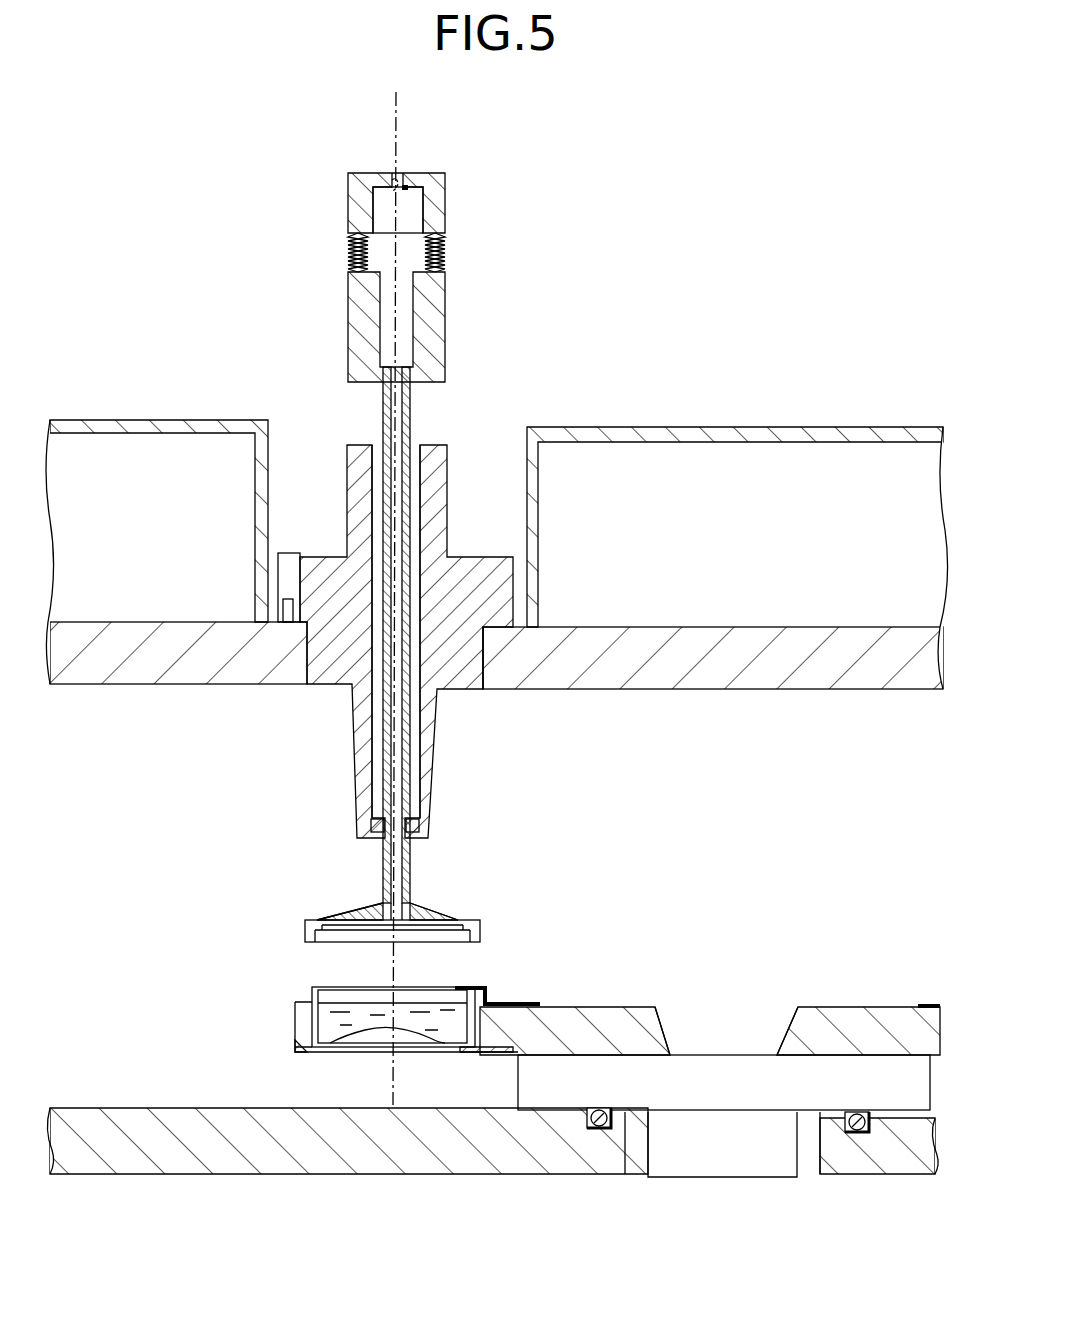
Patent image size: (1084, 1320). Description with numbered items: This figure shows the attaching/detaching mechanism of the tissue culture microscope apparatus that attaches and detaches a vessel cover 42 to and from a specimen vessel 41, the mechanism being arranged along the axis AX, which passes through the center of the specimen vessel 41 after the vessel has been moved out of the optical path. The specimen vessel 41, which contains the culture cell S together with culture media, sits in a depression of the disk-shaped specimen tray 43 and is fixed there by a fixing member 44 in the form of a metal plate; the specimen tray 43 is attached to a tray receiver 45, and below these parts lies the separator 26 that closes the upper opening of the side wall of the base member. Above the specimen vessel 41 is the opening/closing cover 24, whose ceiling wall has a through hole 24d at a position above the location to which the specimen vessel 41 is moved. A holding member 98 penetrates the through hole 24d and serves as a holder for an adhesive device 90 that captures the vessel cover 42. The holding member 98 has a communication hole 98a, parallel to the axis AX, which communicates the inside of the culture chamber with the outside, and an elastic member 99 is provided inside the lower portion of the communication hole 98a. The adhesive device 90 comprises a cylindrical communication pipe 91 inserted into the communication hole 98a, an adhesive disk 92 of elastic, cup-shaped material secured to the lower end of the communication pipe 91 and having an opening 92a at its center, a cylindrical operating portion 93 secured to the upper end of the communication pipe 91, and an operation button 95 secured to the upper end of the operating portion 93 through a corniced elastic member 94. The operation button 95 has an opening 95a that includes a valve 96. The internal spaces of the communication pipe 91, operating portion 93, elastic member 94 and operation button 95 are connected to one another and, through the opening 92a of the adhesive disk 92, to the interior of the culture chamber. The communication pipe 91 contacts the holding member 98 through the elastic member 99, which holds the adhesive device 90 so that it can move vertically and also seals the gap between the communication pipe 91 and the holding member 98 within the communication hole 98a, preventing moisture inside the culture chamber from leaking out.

The axis AX is at (392, 97).
The adhesive device 90 is at (333, 172).
The operation button 95 is at (440, 190).
The opening 95a is at (399, 178).
The valve 96 is at (375, 199).
The elastic member 94 is at (440, 246).
The operating portion 93 is at (440, 316).
The communication pipe 91 is at (384, 421).
The opening/closing cover 24 is at (615, 430).
The through hole 24d is at (487, 657).
The holding member 98 is at (484, 560).
The communication hole 98a is at (420, 442).
The elastic member 99 is at (370, 824).
The adhesive disk 92 is at (426, 905).
The opening 92a is at (389, 921).
The vessel cover 42 is at (479, 922).
The specimen vessel 41 is at (311, 991).
The culture cell S is at (356, 1028).
The fixing member 44 is at (528, 1003).
The specimen tray 43 is at (641, 1006).
The tray receiver 45 is at (712, 1007).
The separator 26 is at (360, 1173).